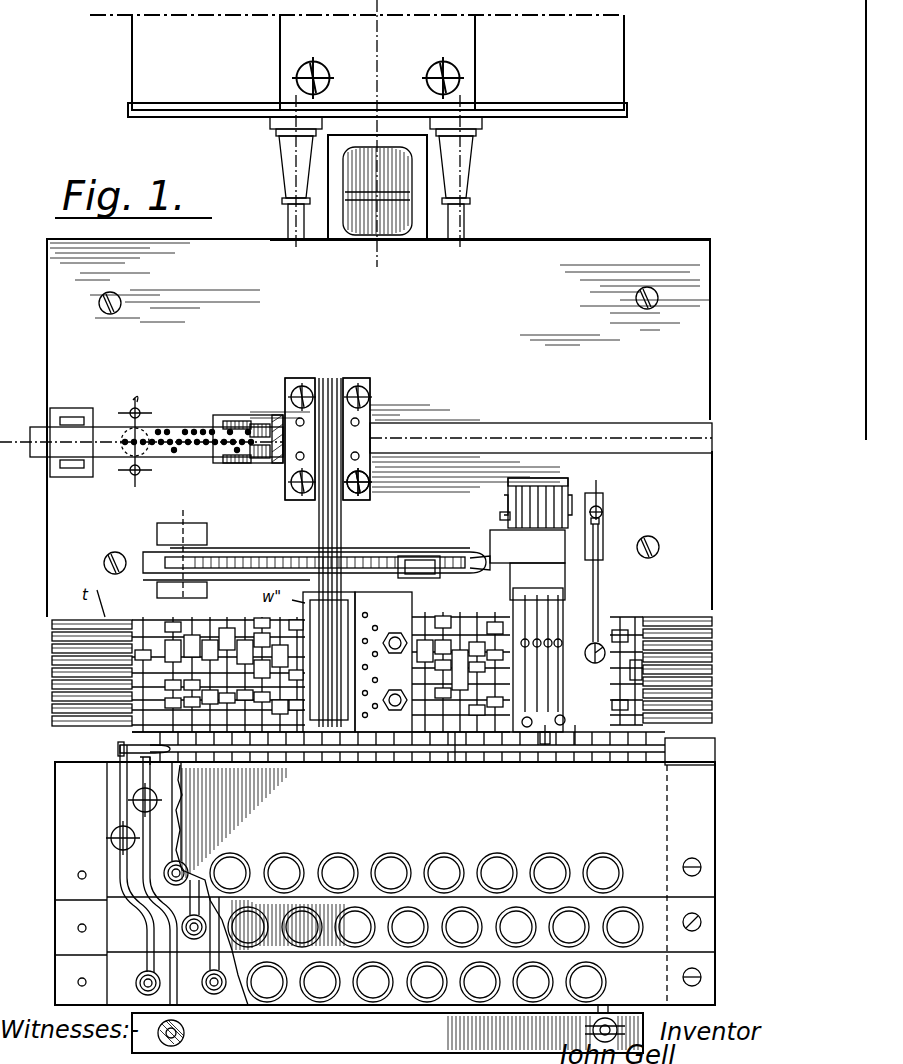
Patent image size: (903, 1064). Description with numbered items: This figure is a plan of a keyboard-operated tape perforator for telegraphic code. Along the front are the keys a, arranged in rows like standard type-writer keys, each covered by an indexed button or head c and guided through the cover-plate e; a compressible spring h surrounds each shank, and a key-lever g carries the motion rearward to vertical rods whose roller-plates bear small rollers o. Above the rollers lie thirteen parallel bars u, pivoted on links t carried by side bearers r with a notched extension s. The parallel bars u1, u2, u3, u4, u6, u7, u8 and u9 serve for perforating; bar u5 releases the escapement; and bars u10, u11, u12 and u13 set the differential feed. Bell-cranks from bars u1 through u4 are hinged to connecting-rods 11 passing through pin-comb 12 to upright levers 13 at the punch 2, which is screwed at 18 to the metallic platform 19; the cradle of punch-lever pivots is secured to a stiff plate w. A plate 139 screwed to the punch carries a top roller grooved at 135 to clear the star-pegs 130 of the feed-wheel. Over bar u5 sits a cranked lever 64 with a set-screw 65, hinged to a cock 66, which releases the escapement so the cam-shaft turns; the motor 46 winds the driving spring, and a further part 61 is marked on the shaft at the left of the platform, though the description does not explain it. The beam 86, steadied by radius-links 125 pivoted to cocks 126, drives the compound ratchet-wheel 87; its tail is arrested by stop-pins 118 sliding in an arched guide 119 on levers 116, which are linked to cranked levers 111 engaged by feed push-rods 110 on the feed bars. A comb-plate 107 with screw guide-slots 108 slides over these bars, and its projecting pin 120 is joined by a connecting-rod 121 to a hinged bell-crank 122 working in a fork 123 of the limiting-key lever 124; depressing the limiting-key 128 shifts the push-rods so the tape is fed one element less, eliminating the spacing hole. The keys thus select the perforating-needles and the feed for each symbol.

The motor 46 is at (546, 108).
The metallic platform 19 is at (520, 276).
The adjusting screw 61 is at (130, 431).
The groove 135 is at (240, 425).
The star-pegs 130 is at (262, 424).
The plate 139 is at (276, 460).
The upright levers 13 is at (318, 382).
The punch 2 is at (370, 400).
The screw point 18 is at (300, 480).
The pin-comb 12 is at (358, 494).
The connecting-rods 11 is at (338, 556).
The compound ratchet-wheel 87 is at (284, 540).
The cocks 126 is at (183, 549).
The radius-links 125 is at (252, 575).
The cranked levers 111 is at (520, 618).
The levers 116 is at (562, 490).
The stop-pins 118 is at (512, 520).
The arched guide 119 is at (527, 546).
The beam 86 is at (520, 578).
The screw guide-slots 108 is at (515, 735).
The cock 66 is at (612, 520).
The cranked lever 64 is at (600, 590).
The set-screw 65 is at (625, 635).
The fork 123 is at (120, 757).
The hinged bell-crank 122 is at (138, 766).
The projecting pin 120 is at (553, 746).
The comb-plate 107 is at (545, 736).
The feed push-rods 110 is at (577, 736).
The connecting-rod 121 is at (455, 746).
The limiting-key lever 124 is at (150, 928).
The limiting-key 128 is at (134, 989).
The parallel bars u is at (365, 600).
The parallel bar u1 is at (70, 738).
The parallel bar u2 is at (75, 710).
The parallel bar u3 is at (72, 696).
The parallel bar u4 is at (70, 684).
The parallel bar u5 is at (70, 672).
The parallel bar u6 is at (72, 660).
The parallel bar u7 is at (75, 648).
The parallel bar u8 is at (80, 636).
The parallel bar u9 is at (98, 622).
The feed parallel bar u10 is at (662, 683).
The feed parallel bar u11 is at (662, 695).
The feed parallel bar u12 is at (662, 707).
The feed parallel bar u13 is at (662, 719).
The side bearers r is at (705, 620).
The notched extension s is at (700, 641).
The rollers o is at (175, 640).
The pivoted links t is at (685, 760).
The key-lever g is at (180, 828).
The compressible spring h is at (140, 976).
The keys a is at (507, 836).
The indexed button or head c is at (380, 853).
The cover-plate e is at (362, 863).
The plate of punch-link pivot-cradle w is at (332, 734).
The element keys is at (426, 927).